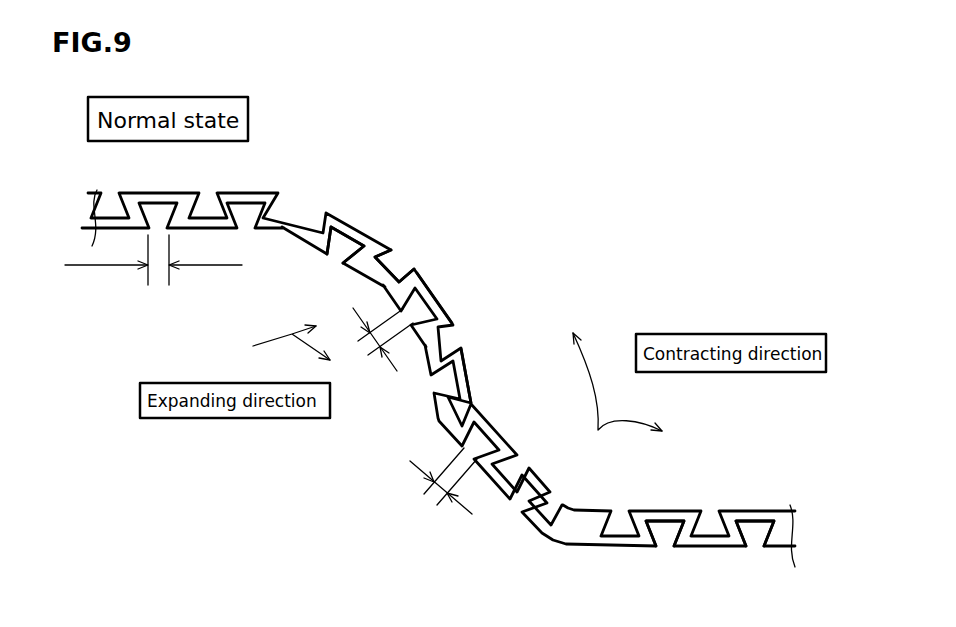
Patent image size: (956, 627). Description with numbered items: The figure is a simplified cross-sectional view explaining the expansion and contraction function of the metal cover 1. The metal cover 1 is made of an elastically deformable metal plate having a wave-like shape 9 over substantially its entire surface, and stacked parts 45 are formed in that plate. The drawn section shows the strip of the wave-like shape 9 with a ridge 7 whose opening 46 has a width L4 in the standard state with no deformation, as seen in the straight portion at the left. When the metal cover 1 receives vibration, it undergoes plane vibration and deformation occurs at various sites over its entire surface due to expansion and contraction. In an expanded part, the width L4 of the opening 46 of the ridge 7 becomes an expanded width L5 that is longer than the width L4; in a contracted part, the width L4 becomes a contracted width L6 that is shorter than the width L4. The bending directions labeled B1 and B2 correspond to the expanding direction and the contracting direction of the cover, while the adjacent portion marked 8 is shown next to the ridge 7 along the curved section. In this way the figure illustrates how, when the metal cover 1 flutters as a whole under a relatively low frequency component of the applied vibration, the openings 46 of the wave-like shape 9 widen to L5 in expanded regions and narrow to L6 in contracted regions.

The metal cover 1 is at (396, 190).
The wave-like shape 9 is at (330, 208).
The stacked parts 45 is at (400, 242).
The opening 46 is at (341, 250).
The ridge 7 is at (410, 258).
The second segment 8 is at (464, 416).
The width L4 is at (160, 268).
The expanded width L5 is at (372, 345).
The contracted width L6 is at (414, 494).
The expanding bending direction B1 is at (274, 345).
The contracting bending direction B2 is at (617, 399).